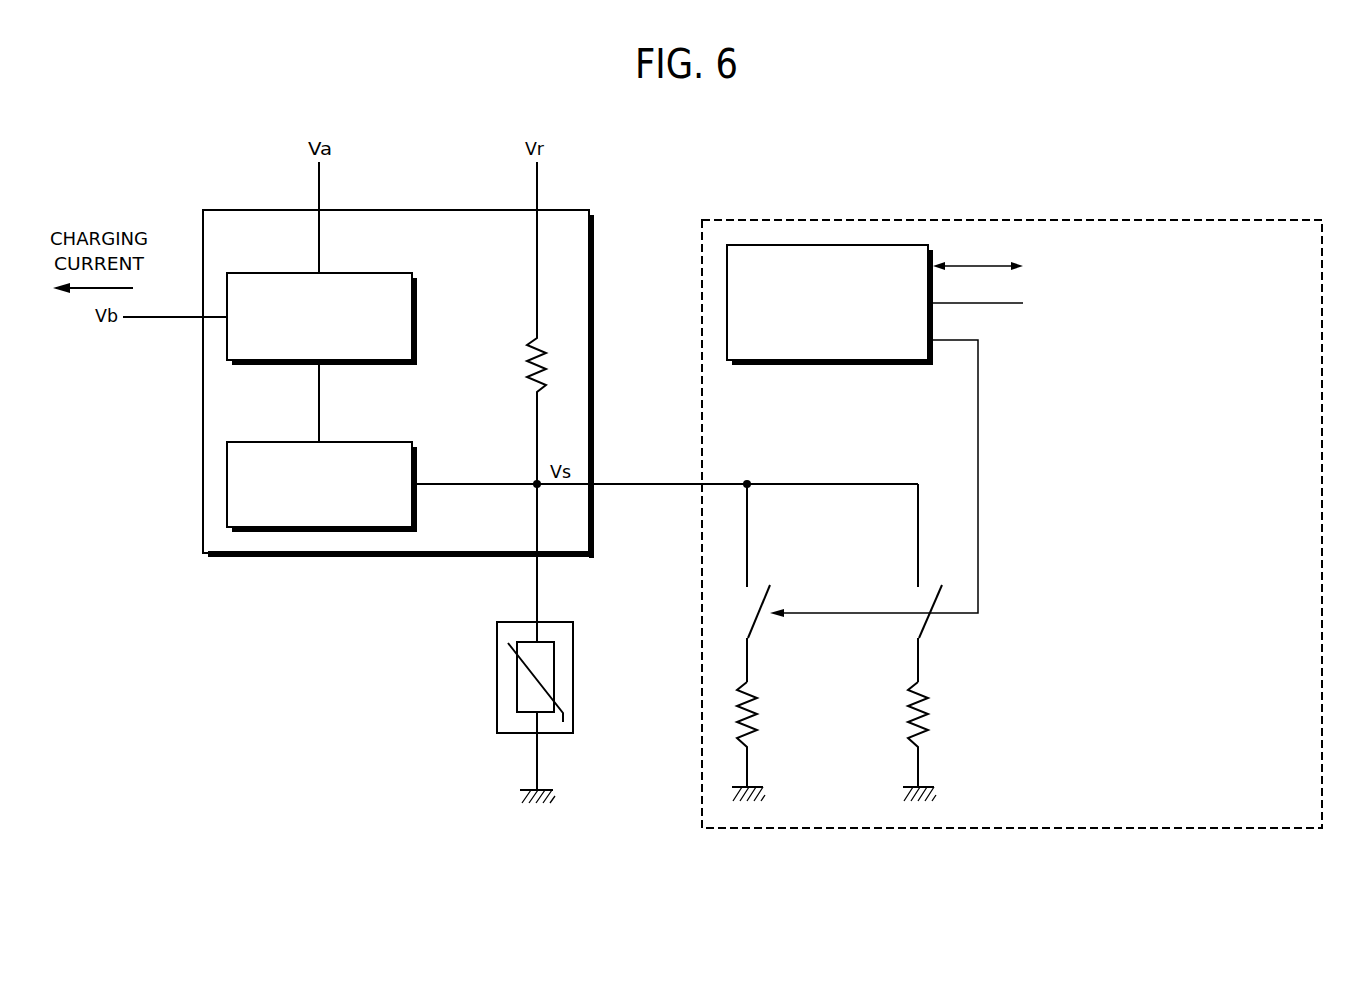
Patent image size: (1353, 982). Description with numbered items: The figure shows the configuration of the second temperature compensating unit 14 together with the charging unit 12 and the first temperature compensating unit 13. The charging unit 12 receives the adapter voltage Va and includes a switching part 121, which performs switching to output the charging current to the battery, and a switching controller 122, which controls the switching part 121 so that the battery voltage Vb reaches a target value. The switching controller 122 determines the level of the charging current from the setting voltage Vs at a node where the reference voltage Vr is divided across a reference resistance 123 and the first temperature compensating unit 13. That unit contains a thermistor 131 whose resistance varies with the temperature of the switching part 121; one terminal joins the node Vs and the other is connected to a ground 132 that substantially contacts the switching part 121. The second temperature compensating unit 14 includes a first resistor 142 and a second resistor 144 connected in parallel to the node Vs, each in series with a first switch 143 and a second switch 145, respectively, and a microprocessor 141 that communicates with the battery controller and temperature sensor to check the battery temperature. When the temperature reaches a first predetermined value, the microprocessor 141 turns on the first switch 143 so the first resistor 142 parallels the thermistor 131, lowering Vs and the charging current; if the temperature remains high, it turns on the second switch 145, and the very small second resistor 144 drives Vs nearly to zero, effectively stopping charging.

The charging unit 12 is at (394, 210).
The switching part 121 is at (227, 350).
The switching controller 122 is at (323, 532).
The reference resistance 123 is at (546, 368).
The first temperature compensating unit 13 is at (497, 650).
The thermistor 131 is at (517, 697).
The ground 132 is at (520, 799).
The second temperature compensating unit 14 is at (1075, 220).
The microprocessor 141 is at (821, 245).
The first resistor 142 is at (737, 718).
The first switch 143 is at (748, 598).
The second resistor 144 is at (908, 718).
The second switch 145 is at (918, 598).